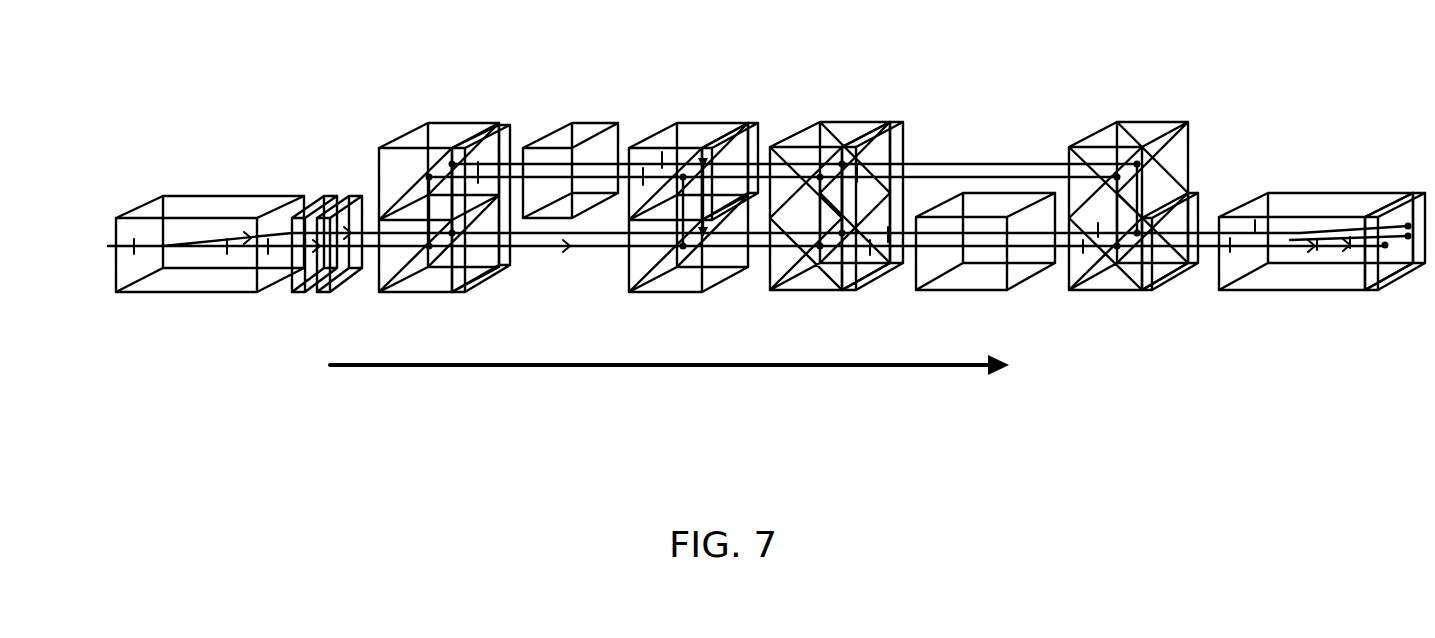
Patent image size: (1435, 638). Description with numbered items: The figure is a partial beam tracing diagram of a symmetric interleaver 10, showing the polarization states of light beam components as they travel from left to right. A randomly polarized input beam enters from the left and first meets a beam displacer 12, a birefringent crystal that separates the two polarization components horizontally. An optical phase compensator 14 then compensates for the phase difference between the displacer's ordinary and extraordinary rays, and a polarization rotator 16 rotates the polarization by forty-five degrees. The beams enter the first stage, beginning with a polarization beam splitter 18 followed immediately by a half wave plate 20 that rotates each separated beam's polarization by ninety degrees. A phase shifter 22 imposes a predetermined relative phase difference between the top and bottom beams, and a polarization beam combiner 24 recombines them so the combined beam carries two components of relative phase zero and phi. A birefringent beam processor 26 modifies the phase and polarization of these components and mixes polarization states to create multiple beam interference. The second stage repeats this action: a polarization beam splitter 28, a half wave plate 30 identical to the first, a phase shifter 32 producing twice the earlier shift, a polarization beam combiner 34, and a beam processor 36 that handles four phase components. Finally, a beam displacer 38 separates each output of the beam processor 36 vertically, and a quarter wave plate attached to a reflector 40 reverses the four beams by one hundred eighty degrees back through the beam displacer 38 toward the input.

The optical system 10 is at (319, 414).
The beam displacer 12 is at (212, 207).
The optical phase compensator 14 is at (309, 212).
The polarization rotator 16 is at (345, 202).
The polarization beam splitter 18 is at (448, 130).
The half wave plate 20 is at (513, 133).
The phase shifter 22 is at (585, 126).
The polarization beam combiner 24 is at (694, 133).
The beam processor 26 is at (756, 136).
The polarization beam splitter 28 is at (846, 128).
The half wave plate 30 is at (903, 143).
The phase shifter 32 is at (998, 210).
The polarization beam combiner 34 is at (1103, 137).
The beam processor 36 is at (1198, 200).
The beam displacer 38 is at (1300, 205).
The quarter wave plate attached to a reflector 40 is at (1418, 197).